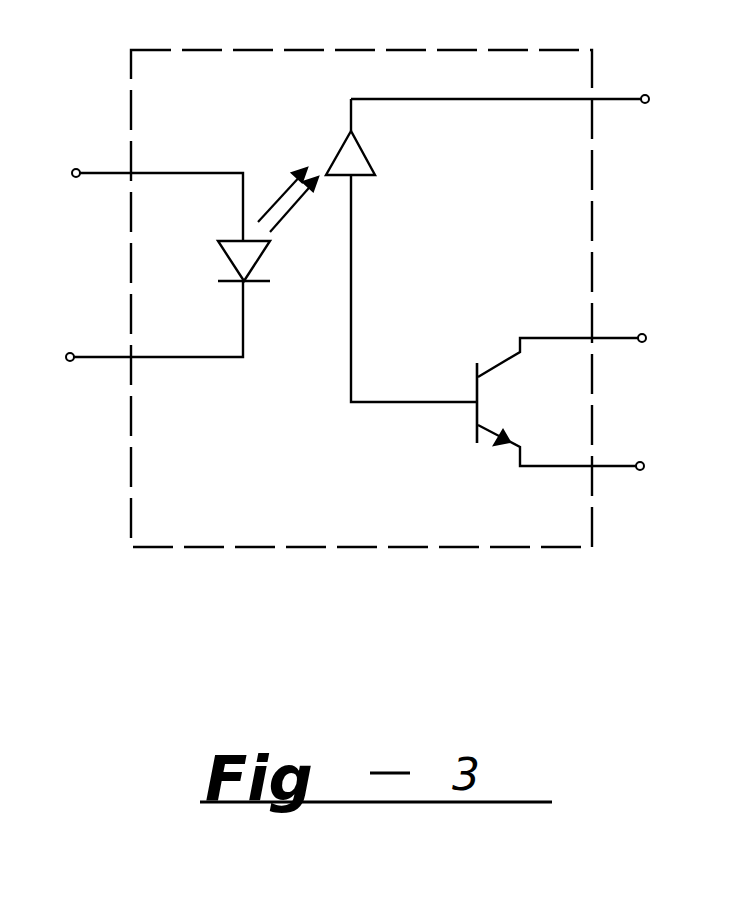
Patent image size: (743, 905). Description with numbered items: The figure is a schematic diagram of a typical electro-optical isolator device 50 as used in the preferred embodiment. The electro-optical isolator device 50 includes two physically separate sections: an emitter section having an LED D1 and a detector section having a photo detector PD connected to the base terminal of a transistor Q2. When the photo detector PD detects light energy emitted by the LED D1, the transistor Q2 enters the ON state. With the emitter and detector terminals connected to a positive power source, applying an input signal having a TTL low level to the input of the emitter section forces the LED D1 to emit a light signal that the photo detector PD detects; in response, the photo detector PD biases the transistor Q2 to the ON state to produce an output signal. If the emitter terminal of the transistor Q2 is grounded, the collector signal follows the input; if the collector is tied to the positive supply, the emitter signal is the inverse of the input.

The electro-optical isolator device 50 is at (221, 50).
The LED D1 is at (172, 299).
The photo detector PD is at (483, 250).
The transistor Q2 is at (512, 448).